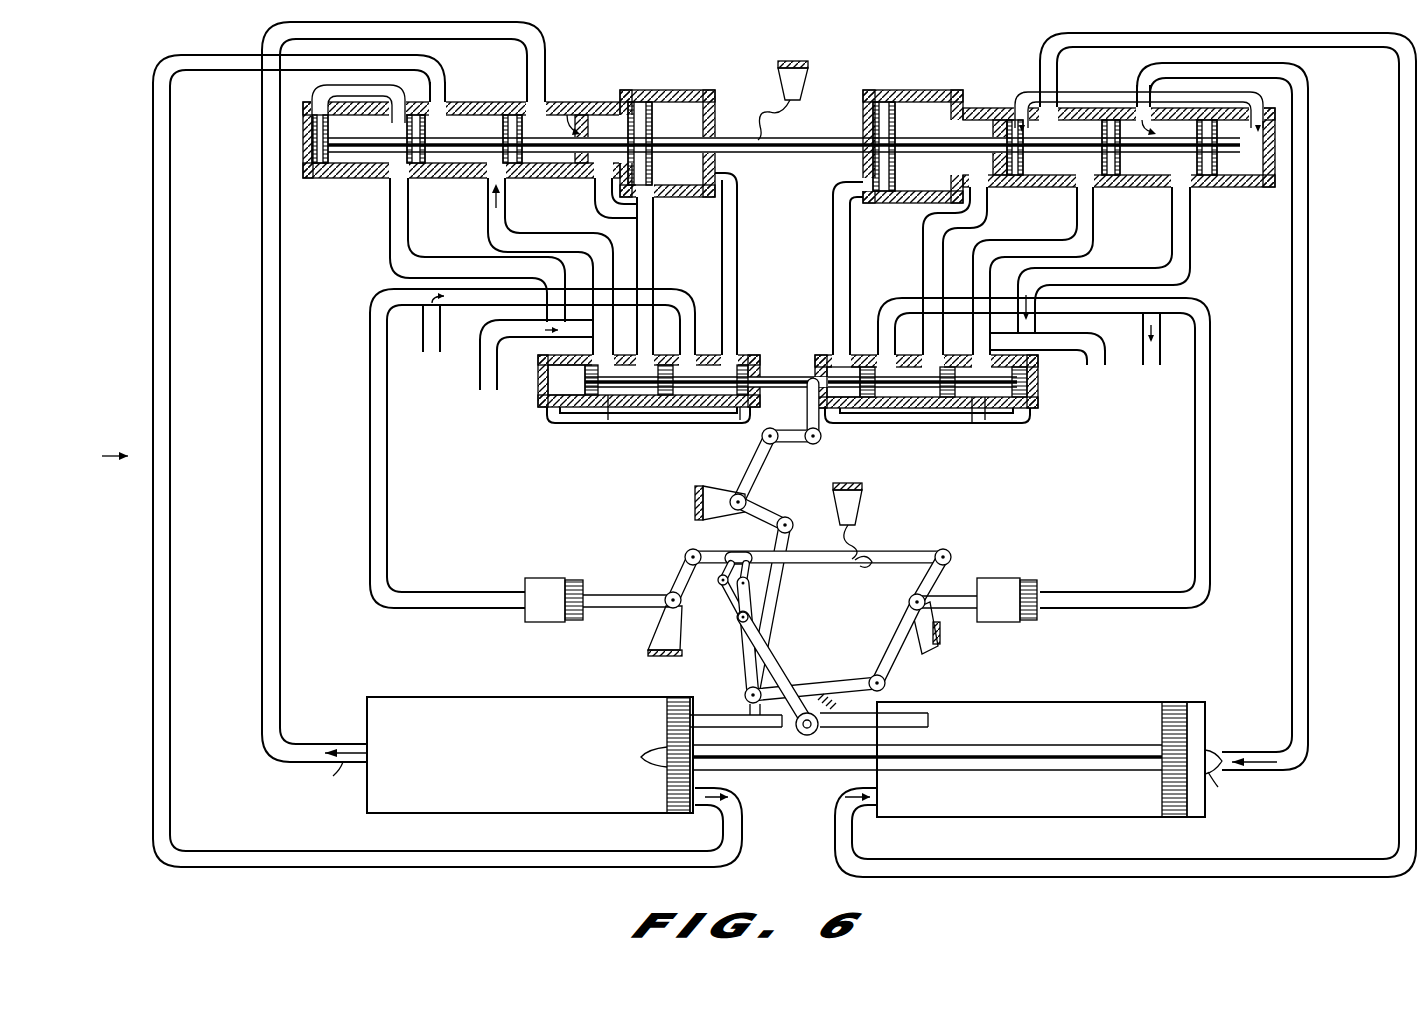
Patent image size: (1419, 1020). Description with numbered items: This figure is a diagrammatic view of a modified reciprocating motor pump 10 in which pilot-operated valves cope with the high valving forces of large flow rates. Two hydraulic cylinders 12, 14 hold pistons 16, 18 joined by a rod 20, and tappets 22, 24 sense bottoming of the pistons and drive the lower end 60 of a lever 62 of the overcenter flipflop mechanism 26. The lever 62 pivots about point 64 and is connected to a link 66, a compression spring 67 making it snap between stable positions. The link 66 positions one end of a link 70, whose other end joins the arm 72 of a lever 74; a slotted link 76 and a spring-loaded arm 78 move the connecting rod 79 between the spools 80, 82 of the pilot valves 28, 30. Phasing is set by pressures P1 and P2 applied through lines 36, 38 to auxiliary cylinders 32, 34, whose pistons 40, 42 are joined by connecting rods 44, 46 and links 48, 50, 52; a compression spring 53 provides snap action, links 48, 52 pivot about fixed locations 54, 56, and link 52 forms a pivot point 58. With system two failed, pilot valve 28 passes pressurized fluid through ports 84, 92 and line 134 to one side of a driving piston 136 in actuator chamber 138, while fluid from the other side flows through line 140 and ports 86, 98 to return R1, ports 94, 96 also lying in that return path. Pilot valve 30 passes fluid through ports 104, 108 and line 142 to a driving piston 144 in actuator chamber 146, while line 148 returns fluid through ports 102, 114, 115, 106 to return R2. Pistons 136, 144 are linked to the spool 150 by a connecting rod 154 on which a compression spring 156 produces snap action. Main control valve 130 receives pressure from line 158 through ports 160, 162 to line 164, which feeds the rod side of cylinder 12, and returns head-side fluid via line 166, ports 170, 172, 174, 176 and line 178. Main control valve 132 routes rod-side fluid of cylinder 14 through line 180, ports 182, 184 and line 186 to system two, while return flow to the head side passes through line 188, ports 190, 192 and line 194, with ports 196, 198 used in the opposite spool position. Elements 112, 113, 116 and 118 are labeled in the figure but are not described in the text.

The reciprocating motor pump 10 is at (103, 456).
The hydraulic cylinder 12 is at (508, 696).
The hydraulic cylinder 14 is at (1035, 699).
The piston 16 is at (676, 816).
The piston 18 is at (1162, 816).
The rod 20 is at (768, 778).
The tappet 22 is at (740, 714).
The tappet 24 is at (835, 712).
The overcenter flipflop mechanism 26 is at (818, 535).
The pilot control valve 28 is at (538, 394).
The pilot control valve 30 is at (1038, 398).
The auxiliary hydraulic cylinder 32 is at (548, 572).
The auxiliary hydraulic cylinder 34 is at (1000, 579).
The line 36 is at (390, 526).
The line 38 is at (1212, 454).
The piston 40 is at (572, 580).
The piston 42 is at (1040, 592).
The connecting rod 44 is at (597, 600).
The connecting rod 46 is at (960, 602).
The link 48 is at (684, 571).
The link 50 is at (860, 570).
The link 52 is at (950, 558).
The compression spring 53 is at (837, 548).
The fixed pivot location 54 is at (656, 618).
The fixed pivot location 56 is at (906, 622).
The pivot point 58 is at (888, 681).
The lower end of lever 60 is at (818, 736).
The lever 62 is at (774, 652).
The pivot point 64 is at (795, 682).
The link 66 is at (746, 672).
The compression spring 67 is at (735, 540).
The link 70 is at (772, 581).
The arm 72 is at (760, 512).
The lever 74 is at (750, 464).
The link 76 is at (785, 444).
The arm 78 is at (805, 406).
The connecting rod 79 is at (793, 362).
The valve spool 80 is at (636, 425).
The valve spool 82 is at (988, 418).
The valve port 84 is at (690, 354).
The valve port 86 is at (648, 354).
The valve port 92 is at (740, 354).
The valve port 94 is at (743, 422).
The valve port 96 is at (606, 420).
The valve port 98 is at (604, 354).
The valve port 102 is at (832, 350).
The valve port 104 is at (884, 350).
The valve port 106 is at (991, 354).
The valve port 108 is at (937, 350).
The nozzle 112 is at (1232, 786).
The nozzle 113 is at (1220, 752).
The valve port 114 is at (828, 420).
The valve port 115 is at (970, 418).
The nozzle 116 is at (648, 742).
The nozzle 118 is at (345, 772).
The main control valve 130 is at (618, 100).
The main control valve 132 is at (977, 110).
The line 134 is at (746, 282).
The control valve driving piston 136 is at (664, 100).
The actuator chamber 138 is at (664, 201).
The line 140 is at (652, 262).
The line 142 is at (918, 246).
The control valve driving piston 144 is at (885, 100).
The actuator chamber 146 is at (918, 98).
The line 148 is at (826, 236).
The spool 150 is at (368, 165).
The connecting rod 154 is at (802, 142).
The compression spring 156 is at (757, 104).
The line 158 is at (500, 224).
The valve port 160 is at (488, 190).
The valve port 162 is at (444, 92).
The line 164 is at (173, 370).
The line 166 is at (280, 480).
The valve port 170 is at (540, 92).
The valve port 172 is at (578, 114).
The valve port 174 is at (382, 127).
The valve port 176 is at (394, 192).
The line 178 is at (407, 250).
The line 180 is at (1398, 514).
The valve port 182 is at (1050, 124).
The valve port 184 is at (1091, 192).
The line 186 is at (1012, 242).
The line 188 is at (1189, 262).
The valve port 190 is at (1192, 192).
The valve port 192 is at (1142, 124).
The line 194 is at (1310, 260).
The valve port 196 is at (1179, 96).
The valve port 198 is at (1034, 96).
The pressure connection of system one P1 is at (428, 341).
The return connection of system one R1 is at (535, 355).
The pressure connection of system two P2 is at (1150, 354).
The return connection of system two R2 is at (1047, 342).